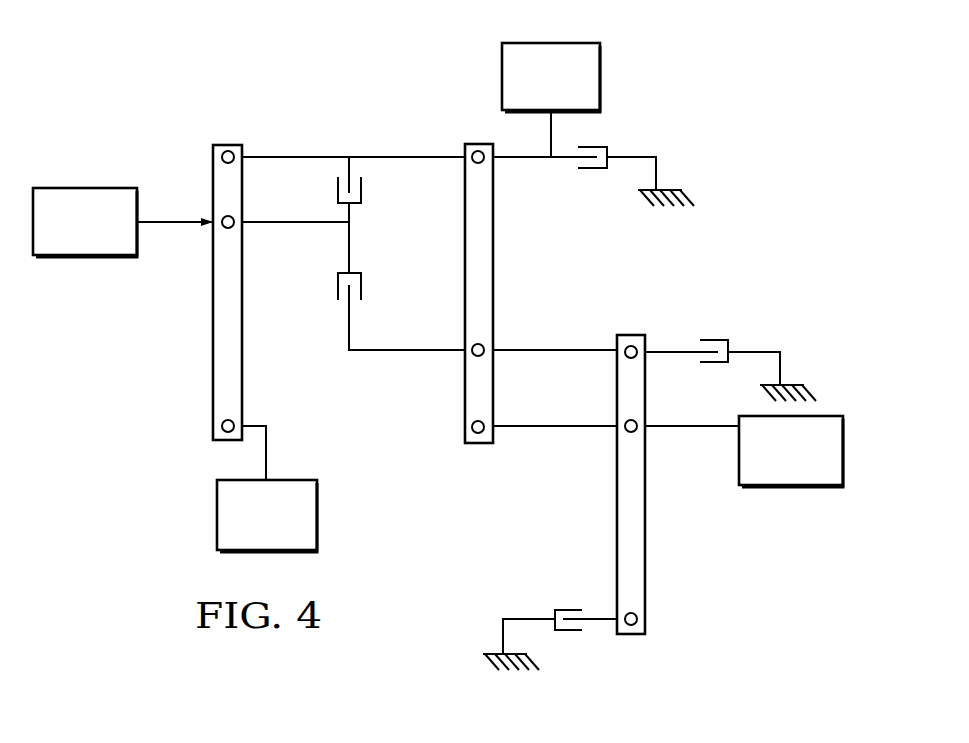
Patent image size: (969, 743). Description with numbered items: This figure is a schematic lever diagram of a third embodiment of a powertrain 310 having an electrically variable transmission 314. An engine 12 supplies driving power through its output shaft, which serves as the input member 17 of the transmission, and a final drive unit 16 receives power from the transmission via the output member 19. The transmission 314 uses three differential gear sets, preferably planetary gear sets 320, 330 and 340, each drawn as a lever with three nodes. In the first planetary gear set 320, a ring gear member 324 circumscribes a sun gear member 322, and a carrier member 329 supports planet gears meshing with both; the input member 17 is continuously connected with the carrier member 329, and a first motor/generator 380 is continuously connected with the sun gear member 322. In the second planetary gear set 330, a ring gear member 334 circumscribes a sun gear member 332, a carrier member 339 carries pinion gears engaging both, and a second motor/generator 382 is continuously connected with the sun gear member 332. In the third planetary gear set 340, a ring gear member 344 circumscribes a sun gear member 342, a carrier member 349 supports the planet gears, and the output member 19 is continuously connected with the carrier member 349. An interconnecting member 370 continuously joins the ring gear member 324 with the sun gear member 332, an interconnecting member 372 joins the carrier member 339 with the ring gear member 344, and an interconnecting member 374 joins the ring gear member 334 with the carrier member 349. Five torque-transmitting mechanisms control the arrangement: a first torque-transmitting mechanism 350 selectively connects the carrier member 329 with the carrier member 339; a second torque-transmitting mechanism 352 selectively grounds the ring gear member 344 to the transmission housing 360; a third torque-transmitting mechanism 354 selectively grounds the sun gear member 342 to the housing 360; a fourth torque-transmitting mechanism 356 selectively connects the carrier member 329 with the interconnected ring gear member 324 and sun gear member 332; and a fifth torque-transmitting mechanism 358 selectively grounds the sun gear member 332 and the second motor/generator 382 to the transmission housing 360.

The engine 12 is at (99, 171).
The final drive unit 16 is at (787, 501).
The input member 17 is at (170, 218).
The output member 19 is at (693, 430).
The powertrain 310 is at (195, 280).
The transmission 314 is at (384, 280).
The planetary gear set 320 is at (189, 436).
The sun gear member 322 is at (224, 419).
The ring gear member 324 is at (226, 152).
The carrier member 329 is at (226, 228).
The planetary gear set 330 is at (446, 434).
The sun gear member 332 is at (474, 152).
The ring gear member 334 is at (474, 419).
The carrier member 339 is at (473, 345).
The planetary gear set 340 is at (666, 633).
The sun gear member 342 is at (637, 612).
The ring gear member 344 is at (628, 346).
The carrier member 349 is at (627, 433).
The first torque-transmitting mechanism 350 is at (328, 295).
The second torque-transmitting mechanism 352 is at (723, 337).
The third torque-transmitting mechanism 354 is at (559, 598).
The fourth torque-transmitting mechanism 356 is at (371, 201).
The fifth torque-transmitting mechanism 358 is at (607, 142).
The transmission housing 360 is at (673, 190).
The interconnecting member 370 is at (290, 157).
The interconnecting member 372 is at (536, 350).
The interconnecting member 374 is at (538, 426).
The first motor/generator 380 is at (216, 508).
The second motor/generator 382 is at (602, 66).